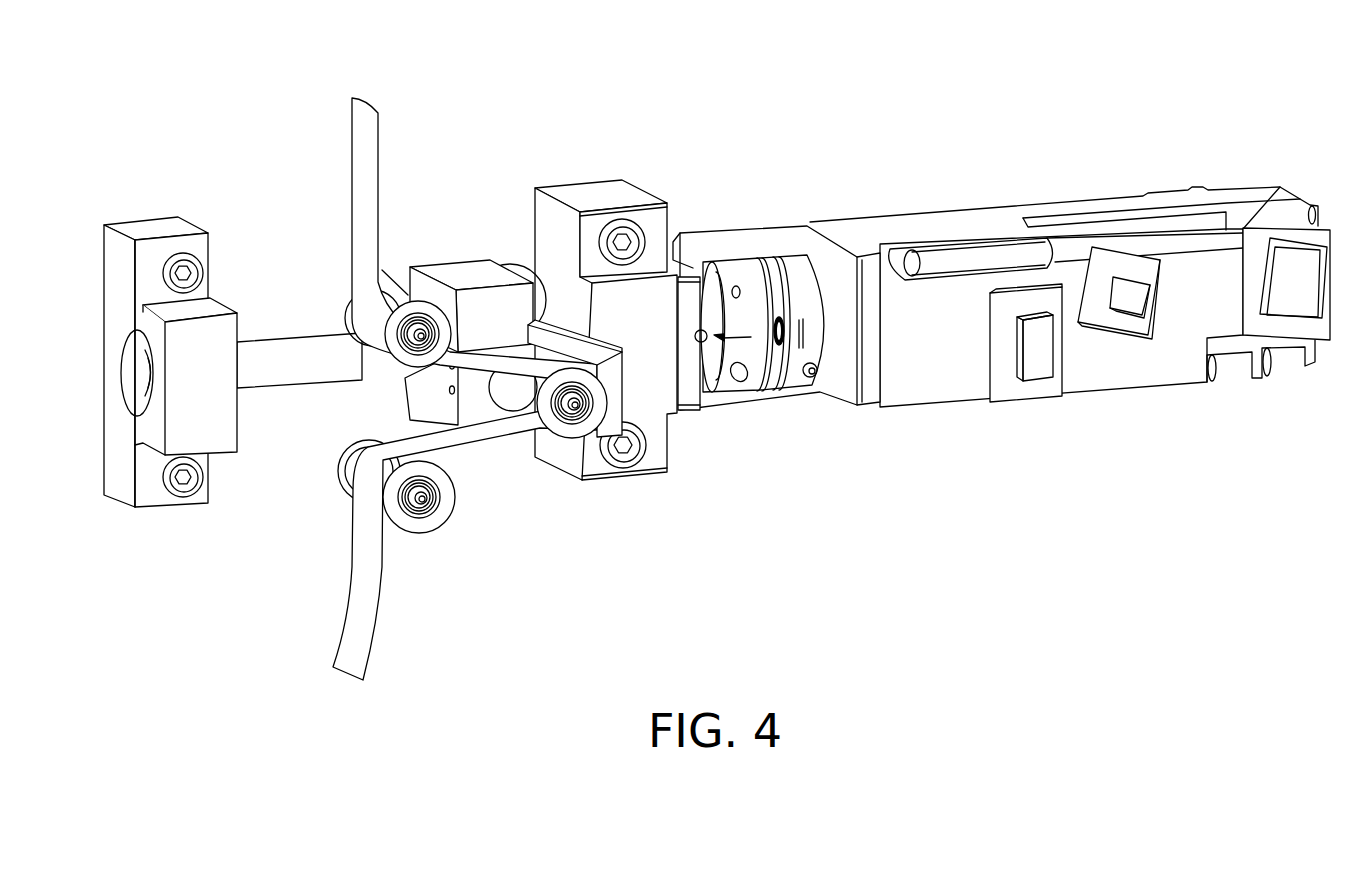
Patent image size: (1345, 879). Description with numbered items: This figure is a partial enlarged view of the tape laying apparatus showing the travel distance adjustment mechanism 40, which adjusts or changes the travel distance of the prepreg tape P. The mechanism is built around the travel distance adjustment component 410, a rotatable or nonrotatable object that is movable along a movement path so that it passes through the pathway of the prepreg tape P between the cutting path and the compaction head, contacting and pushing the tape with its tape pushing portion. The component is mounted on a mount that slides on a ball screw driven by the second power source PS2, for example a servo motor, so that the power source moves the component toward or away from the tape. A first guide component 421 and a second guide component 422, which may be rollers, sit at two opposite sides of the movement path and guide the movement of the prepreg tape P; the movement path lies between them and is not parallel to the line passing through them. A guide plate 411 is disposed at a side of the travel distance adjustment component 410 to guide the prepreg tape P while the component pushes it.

The travel distance adjustment mechanism 40 is at (717, 389).
The travel distance adjustment component 410 is at (565, 428).
The guide plate 411 is at (612, 398).
The first guide component 421 is at (422, 310).
The second guide component 422 is at (430, 517).
The prepreg tape P is at (360, 196).
The second power source PS2 is at (968, 225).